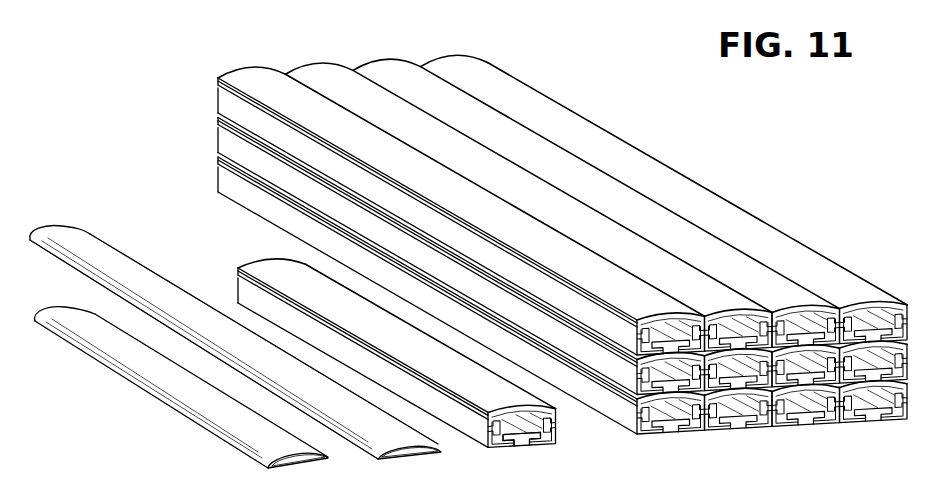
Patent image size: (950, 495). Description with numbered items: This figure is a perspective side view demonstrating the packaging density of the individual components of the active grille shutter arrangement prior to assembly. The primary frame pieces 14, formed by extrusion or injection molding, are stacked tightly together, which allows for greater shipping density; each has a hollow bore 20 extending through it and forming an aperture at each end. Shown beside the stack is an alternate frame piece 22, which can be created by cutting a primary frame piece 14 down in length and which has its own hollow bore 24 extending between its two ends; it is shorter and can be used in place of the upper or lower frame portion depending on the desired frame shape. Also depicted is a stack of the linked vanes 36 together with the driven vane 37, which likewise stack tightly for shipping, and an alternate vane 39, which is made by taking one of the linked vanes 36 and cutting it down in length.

The primary frame pieces 14 is at (562, 226).
The hollow bore 20 is at (795, 318).
The alternate frame piece 22 is at (414, 359).
The hollow bore 24 is at (532, 440).
The linked vanes 36 is at (112, 264).
The driven vane 37 is at (234, 346).
The alternate vanes 39 is at (157, 377).